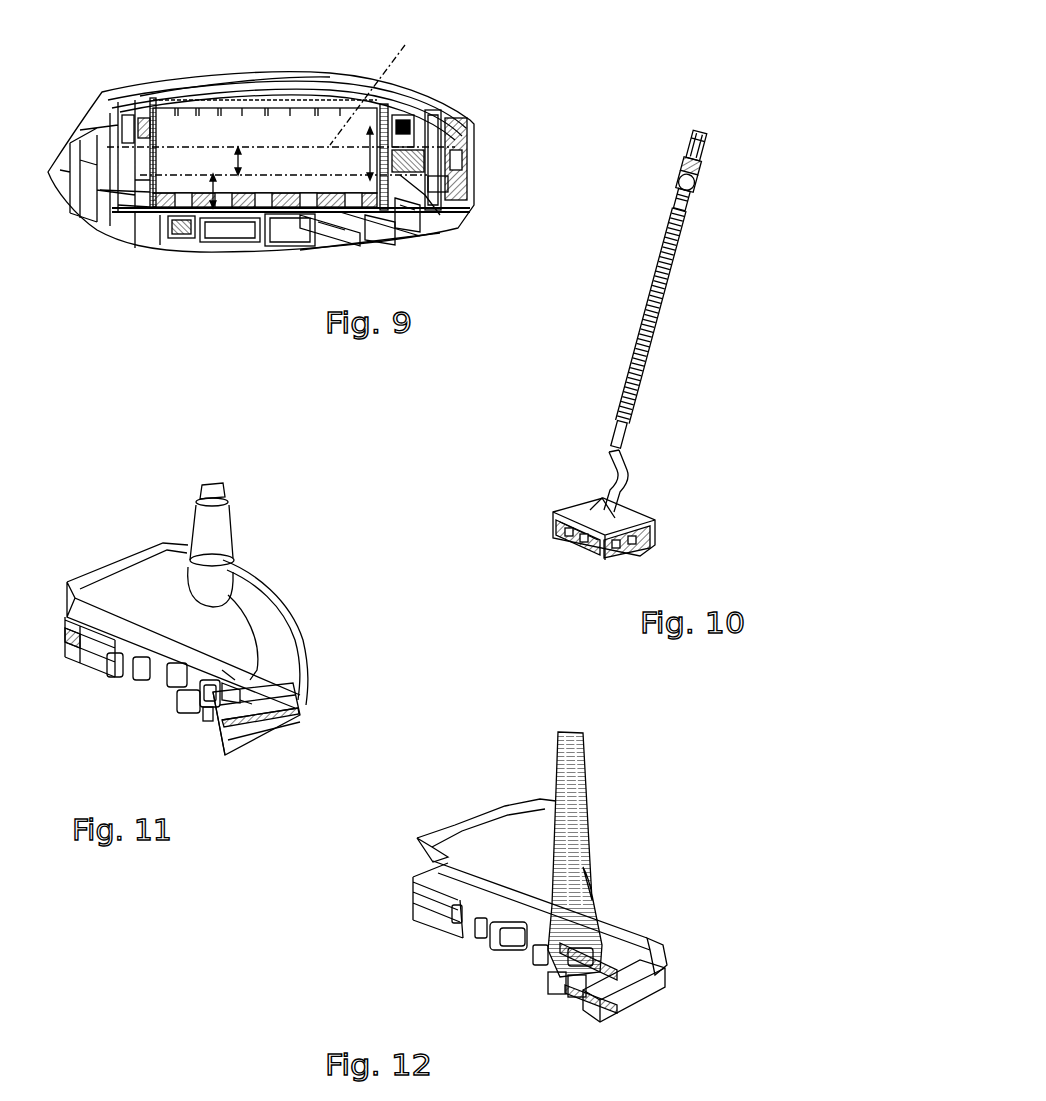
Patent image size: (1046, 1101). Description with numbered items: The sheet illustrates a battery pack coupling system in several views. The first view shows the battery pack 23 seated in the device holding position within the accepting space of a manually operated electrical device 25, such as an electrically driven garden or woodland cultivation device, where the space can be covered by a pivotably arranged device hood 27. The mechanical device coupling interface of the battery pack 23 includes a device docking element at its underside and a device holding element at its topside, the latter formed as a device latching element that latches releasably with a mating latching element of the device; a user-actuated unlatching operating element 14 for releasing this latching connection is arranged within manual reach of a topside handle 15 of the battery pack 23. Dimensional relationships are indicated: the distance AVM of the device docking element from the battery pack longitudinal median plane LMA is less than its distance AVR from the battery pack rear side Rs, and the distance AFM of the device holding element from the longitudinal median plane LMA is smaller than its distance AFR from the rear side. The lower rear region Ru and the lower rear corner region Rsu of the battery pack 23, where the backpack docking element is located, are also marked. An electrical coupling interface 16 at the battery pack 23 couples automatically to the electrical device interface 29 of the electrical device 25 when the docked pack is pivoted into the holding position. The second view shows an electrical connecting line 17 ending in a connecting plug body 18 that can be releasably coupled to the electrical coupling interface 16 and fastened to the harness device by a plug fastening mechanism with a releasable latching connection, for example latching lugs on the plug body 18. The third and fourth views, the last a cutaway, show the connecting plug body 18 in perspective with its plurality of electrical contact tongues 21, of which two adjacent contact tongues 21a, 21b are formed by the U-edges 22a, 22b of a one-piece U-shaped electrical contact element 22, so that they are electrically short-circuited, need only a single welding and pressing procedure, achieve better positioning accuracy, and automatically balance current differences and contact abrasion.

In FIG. 9, the battery pack 23 is at (230, 100).
In FIG. 9, the device hood 27 is at (300, 73).
In FIG. 9, the battery pack longitudinal median plane LMA is at (376, 84).
In FIG. 9, the user-actuated unlatching operating element 14 is at (433, 137).
In FIG. 9, the topside handle 15 is at (476, 165).
In FIG. 9, the electrical coupling interface 16 is at (428, 178).
In FIG. 9, the electrical device interface 29 is at (410, 213).
In FIG. 9, the electrical device 25 is at (394, 220).
In FIG. 9, the distance of the device holding element from the battery pack rear side AFR is at (393, 170).
In FIG. 9, the distance of the device holding element from the longitudinal median plane AFM is at (365, 153).
In FIG. 9, the distance of the device docking element from the longitudinal median plane AVM is at (241, 157).
In FIG. 9, the distance of the device docking element from the battery pack rear side AVR is at (218, 180).
In FIG. 9, the lower rear region Ru is at (140, 163).
In FIG. 9, the lower rear corner region Rsu is at (150, 197).
In FIG. 9, the battery pack rear side Rs is at (218, 210).
In FIG. 10, the electrical connecting line 17 is at (655, 350).
In FIG. 10, the connecting plug body 18 is at (632, 530).
In FIG. 11, the connecting plug body 18 is at (254, 588).
In FIG. 12, the connecting plug body 18 is at (512, 805).
In FIG. 11, the electrical contact tongues 21 is at (180, 687).
In FIG. 12, the electrical contact tongues 21 is at (520, 952).
In FIG. 11, the U-shaped electrical contact element 22 is at (225, 690).
In FIG. 12, the U-shaped electrical contact element 22 is at (585, 950).
In FIG. 11, the U-edge 22a is at (250, 702).
In FIG. 11, the U-edge 22b is at (230, 668).
In FIG. 11, the contact tongue 21a is at (208, 718).
In FIG. 11, the contact tongue 21b is at (193, 708).